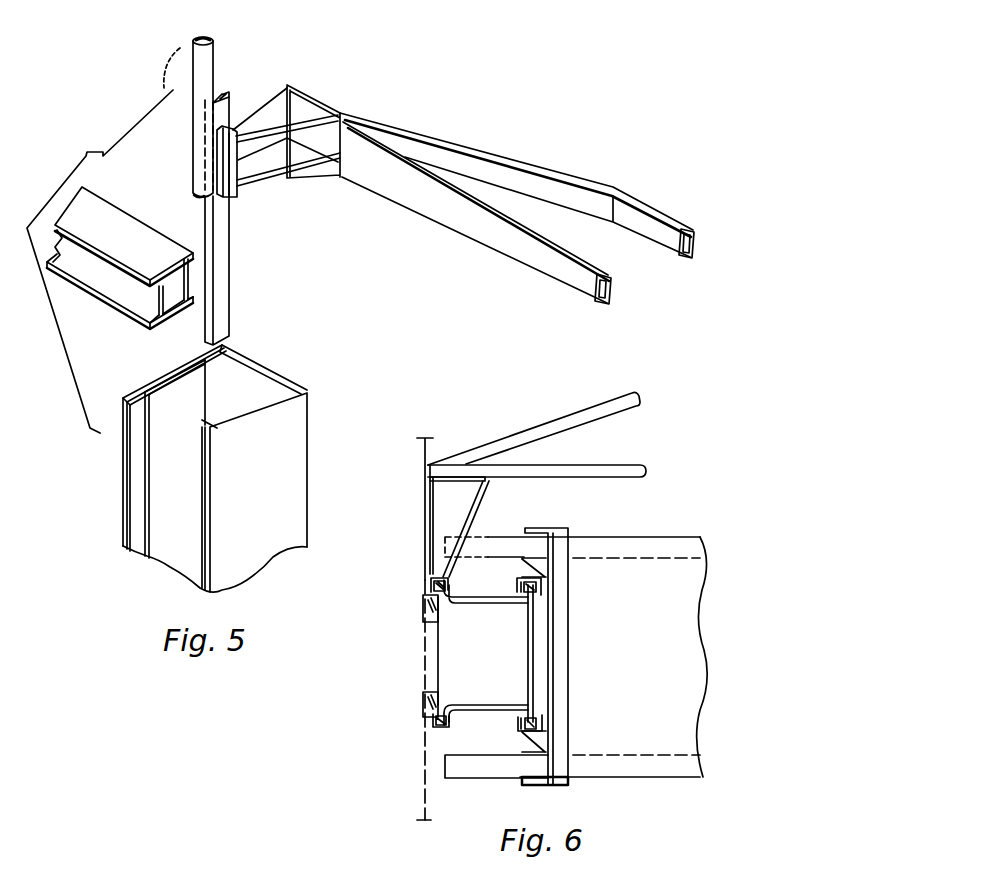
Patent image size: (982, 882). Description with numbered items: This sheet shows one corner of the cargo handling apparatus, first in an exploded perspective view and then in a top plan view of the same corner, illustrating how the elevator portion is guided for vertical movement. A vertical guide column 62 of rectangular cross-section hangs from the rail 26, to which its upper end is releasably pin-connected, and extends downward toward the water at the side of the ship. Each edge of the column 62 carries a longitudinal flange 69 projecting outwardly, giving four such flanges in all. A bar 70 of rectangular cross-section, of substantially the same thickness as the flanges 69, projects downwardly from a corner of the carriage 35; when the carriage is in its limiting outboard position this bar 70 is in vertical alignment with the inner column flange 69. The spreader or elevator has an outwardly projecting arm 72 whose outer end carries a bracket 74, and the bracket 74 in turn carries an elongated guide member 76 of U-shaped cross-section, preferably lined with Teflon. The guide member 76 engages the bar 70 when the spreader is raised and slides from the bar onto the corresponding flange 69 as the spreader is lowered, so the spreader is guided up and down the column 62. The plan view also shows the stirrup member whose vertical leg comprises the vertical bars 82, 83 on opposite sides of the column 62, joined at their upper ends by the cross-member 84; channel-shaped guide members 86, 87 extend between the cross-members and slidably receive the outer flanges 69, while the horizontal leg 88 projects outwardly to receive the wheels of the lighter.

In FIG. 5, the rail 26 is at (123, 315).
In FIG. 5, the carriage 35 is at (193, 70).
In FIG. 5, the vertical guide column 62 is at (122, 452).
In FIG. 6, the vertical guide column 62 is at (437, 662).
In FIG. 5, the longitudinal flange 69 is at (228, 355).
In FIG. 6, the longitudinal flange 69 is at (430, 582).
In FIG. 5, the bar 70 is at (230, 323).
In FIG. 5, the arm 72 is at (417, 130).
In FIG. 6, the arm 72 is at (531, 430).
In FIG. 5, the bracket 74 is at (275, 108).
In FIG. 6, the bracket 74 is at (478, 507).
In FIG. 5, the guide member 76 is at (237, 193).
In FIG. 6, the vertical bar 82 is at (460, 779).
In FIG. 6, the vertical bar 83 is at (472, 537).
In FIG. 6, the cross-member 84 is at (570, 615).
In FIG. 6, the channel-shaped guide member 86 is at (520, 727).
In FIG. 6, the channel-shaped guide member 87 is at (518, 582).
In FIG. 6, the horizontal leg 88 is at (598, 536).